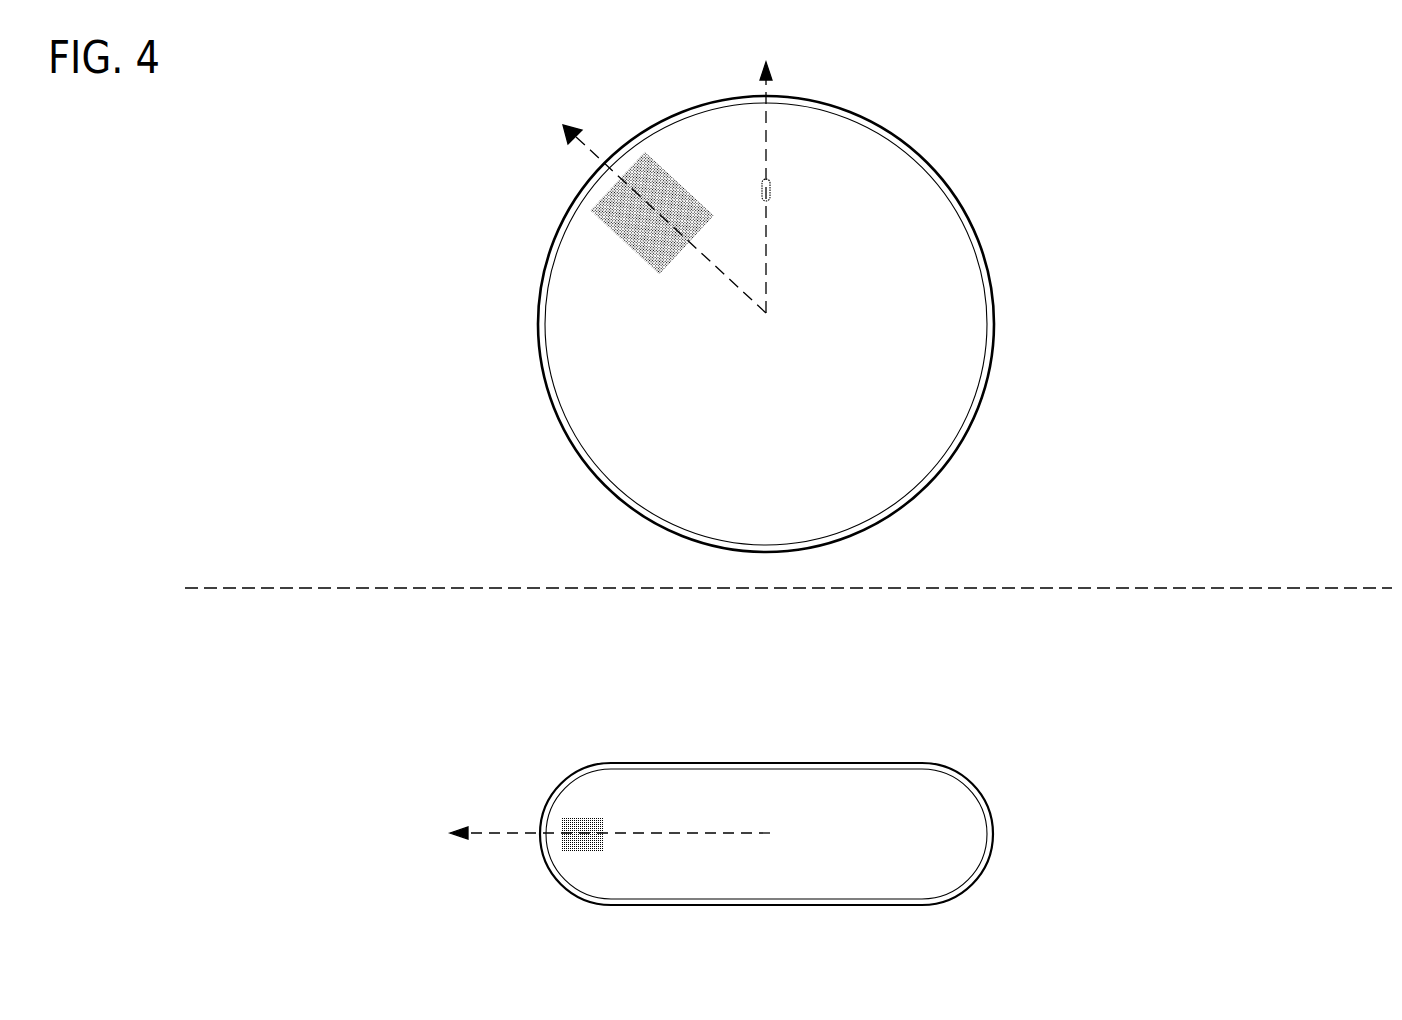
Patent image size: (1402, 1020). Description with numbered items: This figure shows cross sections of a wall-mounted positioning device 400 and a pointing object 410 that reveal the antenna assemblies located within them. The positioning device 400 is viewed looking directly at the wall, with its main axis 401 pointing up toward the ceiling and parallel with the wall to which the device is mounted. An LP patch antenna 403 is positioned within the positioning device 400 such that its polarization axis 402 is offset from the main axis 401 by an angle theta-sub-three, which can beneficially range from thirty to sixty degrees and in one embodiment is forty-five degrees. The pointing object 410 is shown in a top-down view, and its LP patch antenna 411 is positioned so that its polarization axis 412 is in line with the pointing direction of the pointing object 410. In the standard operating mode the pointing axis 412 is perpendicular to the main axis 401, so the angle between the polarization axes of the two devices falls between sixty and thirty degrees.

The wall-mounted positioning device 400 is at (281, 153).
The main axis 401 is at (767, 115).
The polarization axis 402 is at (732, 282).
The LP patch antenna 403 is at (713, 172).
The pointing object 410 is at (289, 643).
The LP patch antenna 411 is at (582, 818).
The polarization axis 412 is at (518, 832).